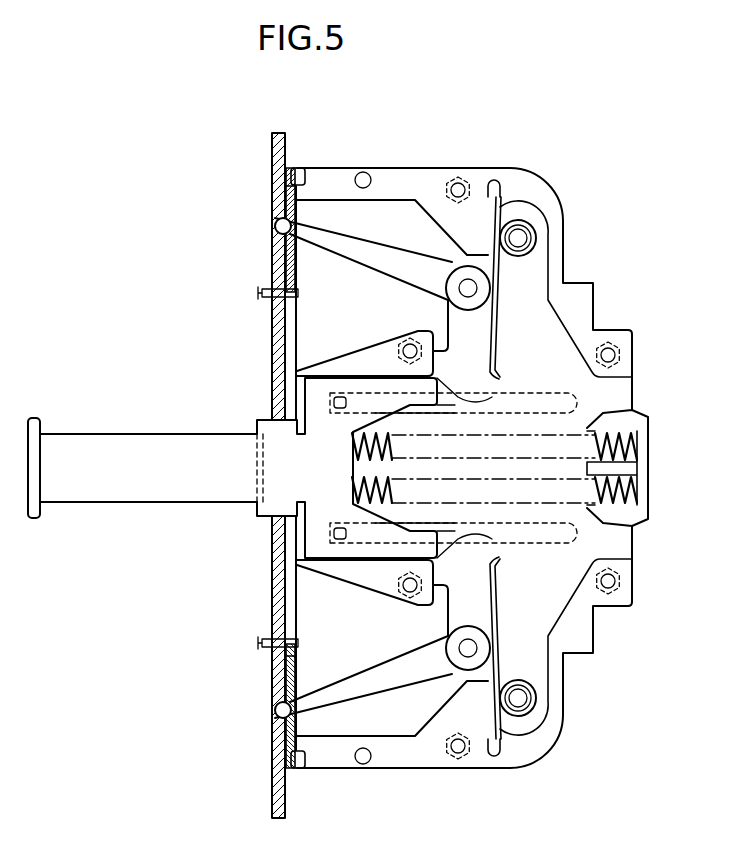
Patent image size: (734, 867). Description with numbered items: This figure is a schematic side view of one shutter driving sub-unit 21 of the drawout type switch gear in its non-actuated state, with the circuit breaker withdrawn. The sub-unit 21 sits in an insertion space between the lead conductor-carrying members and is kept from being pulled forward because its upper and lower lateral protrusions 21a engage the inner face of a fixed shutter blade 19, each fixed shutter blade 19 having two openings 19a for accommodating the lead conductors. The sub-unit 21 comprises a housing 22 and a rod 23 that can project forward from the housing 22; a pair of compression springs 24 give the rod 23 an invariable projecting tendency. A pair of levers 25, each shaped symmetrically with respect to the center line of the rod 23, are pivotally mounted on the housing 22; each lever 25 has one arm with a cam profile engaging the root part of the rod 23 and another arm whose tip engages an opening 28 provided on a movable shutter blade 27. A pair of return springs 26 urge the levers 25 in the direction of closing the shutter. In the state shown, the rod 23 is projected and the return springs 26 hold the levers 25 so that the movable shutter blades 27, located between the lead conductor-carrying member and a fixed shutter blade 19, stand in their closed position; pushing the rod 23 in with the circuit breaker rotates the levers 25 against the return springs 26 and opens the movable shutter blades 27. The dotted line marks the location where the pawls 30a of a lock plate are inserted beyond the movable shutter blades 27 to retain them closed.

The fixed shutter blade 19 is at (280, 338).
The opening 19a is at (275, 192).
The shutter driving sub-unit 21 is at (640, 577).
The lateral protrusion 21a is at (298, 168).
The housing 22 is at (580, 297).
The rod 23 is at (147, 432).
The compression spring 24 is at (640, 488).
The lever 25 is at (360, 243).
The return spring 26 is at (535, 232).
The movable shutter blade 27 is at (289, 262).
The opening 28 is at (279, 228).
The pawl 30a is at (300, 293).